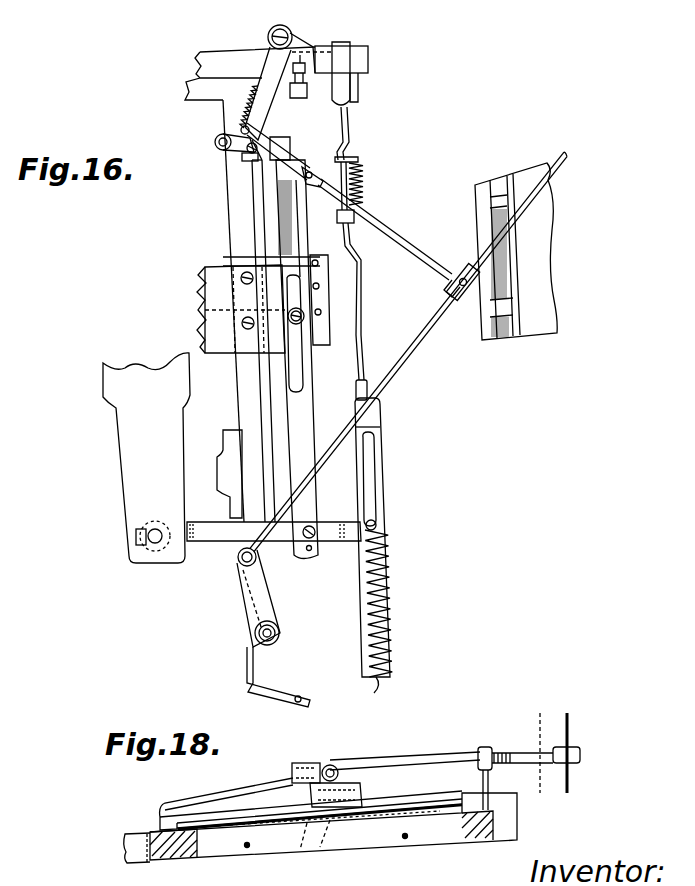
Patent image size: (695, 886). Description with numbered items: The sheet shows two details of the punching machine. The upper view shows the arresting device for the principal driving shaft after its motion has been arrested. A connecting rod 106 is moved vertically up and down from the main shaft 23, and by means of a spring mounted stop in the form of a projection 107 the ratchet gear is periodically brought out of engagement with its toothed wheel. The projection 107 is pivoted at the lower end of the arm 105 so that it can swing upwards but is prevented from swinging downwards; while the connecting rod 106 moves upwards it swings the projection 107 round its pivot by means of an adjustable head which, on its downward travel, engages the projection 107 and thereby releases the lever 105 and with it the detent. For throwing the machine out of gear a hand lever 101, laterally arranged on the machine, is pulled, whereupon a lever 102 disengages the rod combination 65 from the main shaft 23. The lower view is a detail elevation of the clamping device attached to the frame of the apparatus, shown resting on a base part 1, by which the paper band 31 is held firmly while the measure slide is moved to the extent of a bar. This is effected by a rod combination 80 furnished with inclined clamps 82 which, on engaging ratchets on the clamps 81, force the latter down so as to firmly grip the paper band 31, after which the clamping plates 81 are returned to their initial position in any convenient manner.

In FIG. 16, the arm 105 is at (268, 105).
In FIG. 16, the projection 107 is at (233, 147).
In FIG. 16, the rod combination 65 is at (347, 122).
In FIG. 16, the connecting rod 106 is at (277, 145).
In FIG. 16, the hand lever 101 is at (548, 184).
In FIG. 16, the main shaft 23 is at (157, 544).
In FIG. 16, the lever 102 is at (256, 616).
In FIG. 18, the base plate 1 is at (197, 848).
In FIG. 18, the paper band 31 is at (393, 813).
In FIG. 18, the clamps 81 is at (237, 813).
In FIG. 18, the inclined clamps 82 is at (300, 850).
In FIG. 18, the rod combination 80 is at (540, 743).